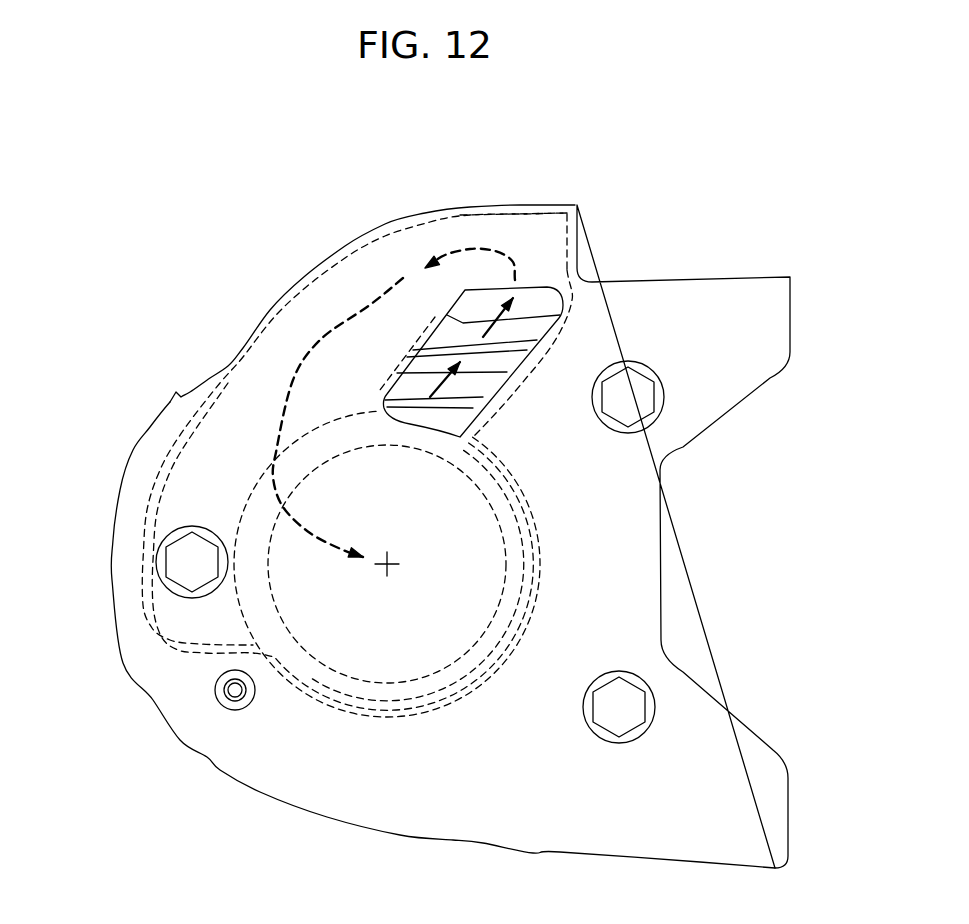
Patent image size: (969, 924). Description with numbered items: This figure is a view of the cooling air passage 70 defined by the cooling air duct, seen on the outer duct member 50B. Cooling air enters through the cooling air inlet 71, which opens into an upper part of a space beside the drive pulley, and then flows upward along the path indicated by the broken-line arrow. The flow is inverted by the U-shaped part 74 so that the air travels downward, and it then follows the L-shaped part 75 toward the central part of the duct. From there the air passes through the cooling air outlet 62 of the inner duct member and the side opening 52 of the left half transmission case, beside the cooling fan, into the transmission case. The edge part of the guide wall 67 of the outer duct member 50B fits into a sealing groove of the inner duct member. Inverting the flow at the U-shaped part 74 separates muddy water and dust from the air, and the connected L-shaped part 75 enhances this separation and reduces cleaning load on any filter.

The outer duct member 50B is at (708, 298).
The cooling air passage 70 is at (302, 317).
The cooling air inlet 71 is at (550, 273).
The U-shaped part 74 is at (474, 226).
The L-shaped part 75 is at (263, 401).
The side opening 52 is at (470, 693).
The cooling air outlet 62 is at (362, 680).
The guide wall 67 is at (202, 650).